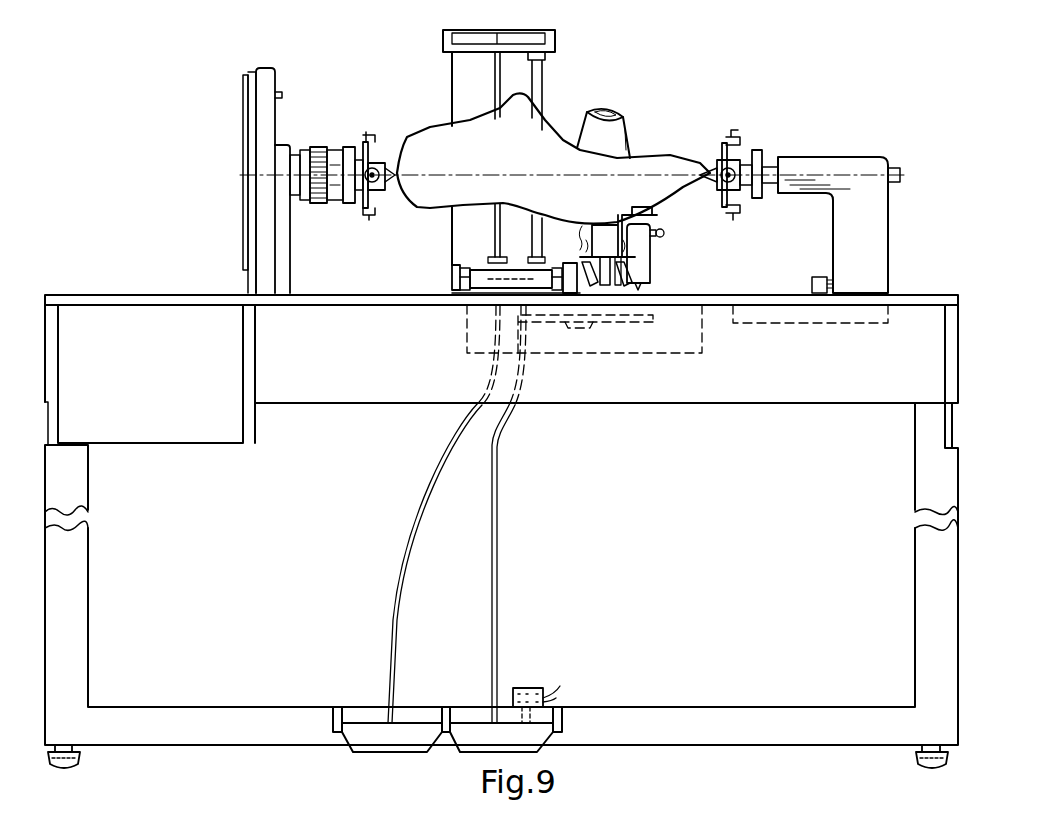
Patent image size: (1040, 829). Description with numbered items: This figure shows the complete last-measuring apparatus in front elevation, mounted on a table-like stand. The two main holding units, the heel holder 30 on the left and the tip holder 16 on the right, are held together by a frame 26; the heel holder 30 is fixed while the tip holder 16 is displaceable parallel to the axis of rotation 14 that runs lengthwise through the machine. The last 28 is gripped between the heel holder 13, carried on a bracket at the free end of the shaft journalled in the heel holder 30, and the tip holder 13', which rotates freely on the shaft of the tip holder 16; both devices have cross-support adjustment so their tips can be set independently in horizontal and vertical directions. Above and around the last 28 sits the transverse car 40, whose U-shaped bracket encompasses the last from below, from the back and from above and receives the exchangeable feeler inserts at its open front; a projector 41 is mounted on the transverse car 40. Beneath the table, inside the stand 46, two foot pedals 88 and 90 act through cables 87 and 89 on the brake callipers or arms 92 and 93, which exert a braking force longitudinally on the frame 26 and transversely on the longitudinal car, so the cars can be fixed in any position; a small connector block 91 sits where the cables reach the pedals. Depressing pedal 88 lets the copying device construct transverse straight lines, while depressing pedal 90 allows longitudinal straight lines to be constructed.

The heel holder 13 is at (342, 158).
The tip holder 13' is at (743, 151).
The axis of rotation 14 is at (672, 172).
The tip holder 16 is at (827, 148).
The frame 26 is at (328, 298).
The last 28 is at (491, 164).
The heel holder 30 is at (291, 105).
The transverse car 40 is at (433, 110).
The projector 41 is at (628, 130).
The frame 46 is at (948, 484).
The cable 87 is at (399, 620).
The foot pedal 88 is at (415, 723).
The cable 89 is at (498, 622).
The foot pedal 90 is at (545, 736).
The connector box 91 is at (530, 688).
The brake calliper 92 is at (462, 276).
The brake calliper 93 is at (623, 318).